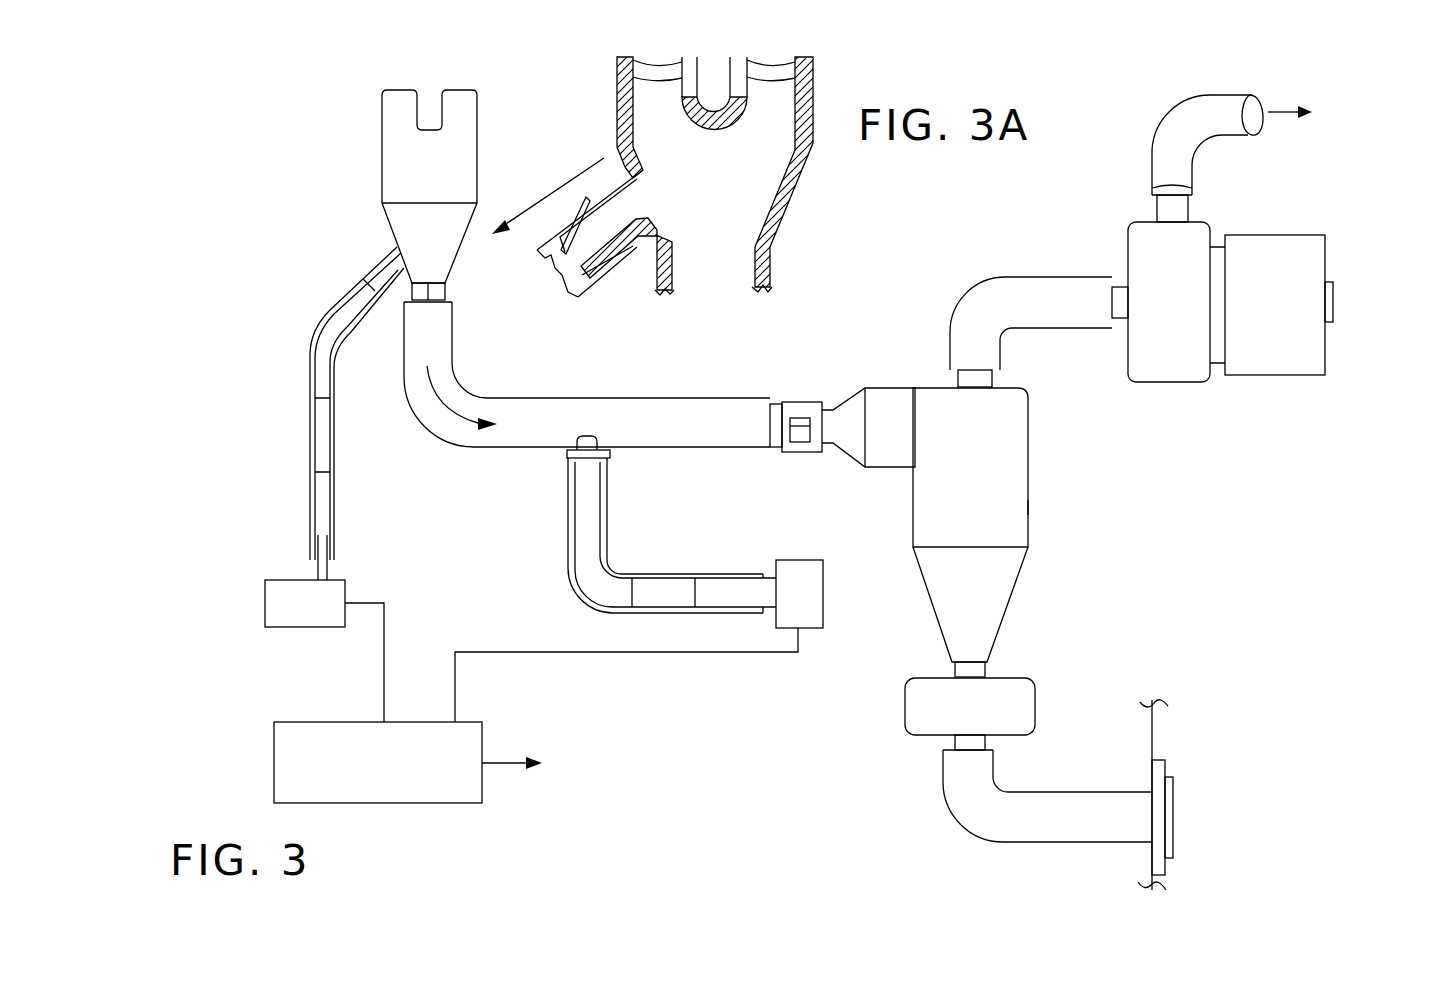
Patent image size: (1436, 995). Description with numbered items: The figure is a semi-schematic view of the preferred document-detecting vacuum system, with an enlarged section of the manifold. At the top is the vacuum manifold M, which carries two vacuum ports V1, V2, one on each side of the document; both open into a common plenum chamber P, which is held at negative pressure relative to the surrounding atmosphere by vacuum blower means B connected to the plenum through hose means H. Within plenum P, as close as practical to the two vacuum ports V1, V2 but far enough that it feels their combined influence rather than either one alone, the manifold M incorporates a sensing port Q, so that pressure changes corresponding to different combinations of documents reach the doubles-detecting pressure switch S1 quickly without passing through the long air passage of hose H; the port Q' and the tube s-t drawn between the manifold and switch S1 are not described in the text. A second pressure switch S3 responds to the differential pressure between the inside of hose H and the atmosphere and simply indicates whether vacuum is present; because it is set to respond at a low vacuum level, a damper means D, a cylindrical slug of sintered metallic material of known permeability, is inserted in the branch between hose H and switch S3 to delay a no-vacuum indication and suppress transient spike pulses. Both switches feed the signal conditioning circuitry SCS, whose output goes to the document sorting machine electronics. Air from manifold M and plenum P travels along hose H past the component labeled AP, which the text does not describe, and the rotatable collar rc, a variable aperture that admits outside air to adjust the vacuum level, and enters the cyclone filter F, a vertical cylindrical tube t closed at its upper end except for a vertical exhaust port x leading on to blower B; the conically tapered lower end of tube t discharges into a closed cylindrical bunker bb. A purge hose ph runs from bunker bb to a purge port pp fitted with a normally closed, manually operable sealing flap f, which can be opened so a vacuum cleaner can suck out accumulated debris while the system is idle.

In FIG. 3, the vacuum manifold M is at (372, 152).
In FIG. 3A, the vacuum manifold M is at (815, 180).
In FIG. 3, the probe at hopper Q' is at (349, 259).
In FIG. 3, the sensing tube s-t is at (320, 325).
In FIG. 3, the damper means D is at (316, 437).
In FIG. 3, the pressure switch S1 is at (280, 588).
In FIG. 3, the hose means H is at (530, 436).
In FIG. 3, the aspirator pump AP is at (805, 378).
In FIG. 3, the rotatable collar rc is at (800, 456).
In FIG. 3, the second pressure switch S3 is at (805, 560).
In FIG. 3, the vertical exhaust port x is at (985, 378).
In FIG. 3, the cyclone filter F is at (1045, 458).
In FIG. 3, the vertical cylindrical tube t is at (1028, 507).
In FIG. 3, the vacuum blower means B is at (1173, 378).
In FIG. 3, the bunker bb is at (905, 690).
In FIG. 3, the purge hose ph is at (985, 820).
In FIG. 3, the purge port pp is at (1180, 765).
In FIG. 3, the sealing flap f is at (1175, 848).
In FIG. 3, the signal conditioning circuitry SCS is at (355, 722).
In FIG. 3A, the vacuum port V1 is at (687, 77).
In FIG. 3A, the vacuum port V2 is at (742, 75).
In FIG. 3A, the plenum chamber P is at (755, 213).
In FIG. 3A, the sensing port Q is at (567, 237).